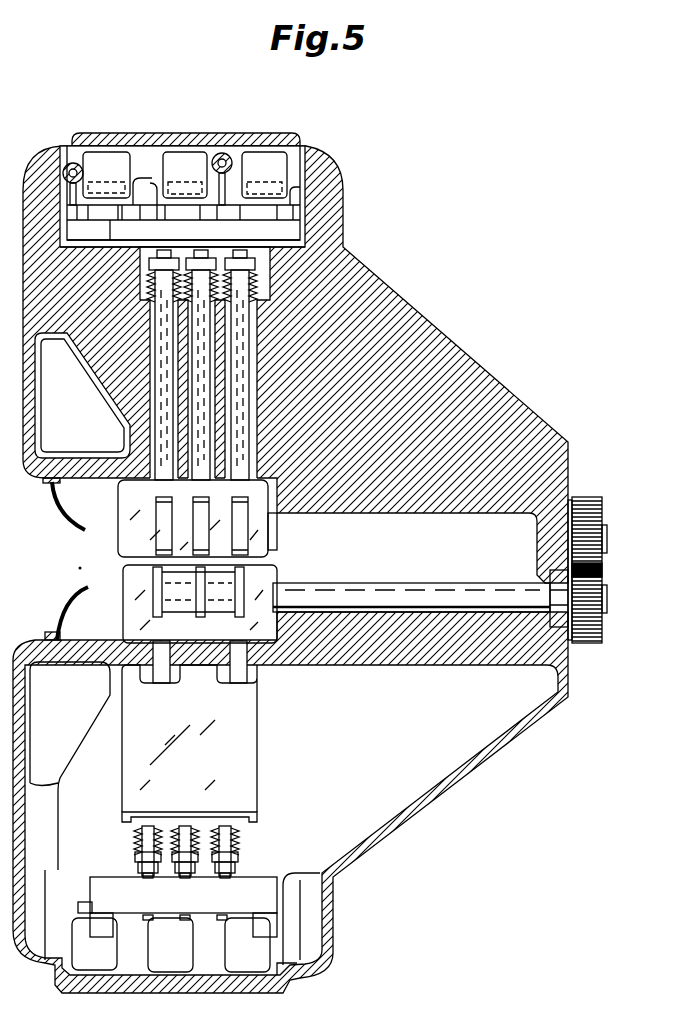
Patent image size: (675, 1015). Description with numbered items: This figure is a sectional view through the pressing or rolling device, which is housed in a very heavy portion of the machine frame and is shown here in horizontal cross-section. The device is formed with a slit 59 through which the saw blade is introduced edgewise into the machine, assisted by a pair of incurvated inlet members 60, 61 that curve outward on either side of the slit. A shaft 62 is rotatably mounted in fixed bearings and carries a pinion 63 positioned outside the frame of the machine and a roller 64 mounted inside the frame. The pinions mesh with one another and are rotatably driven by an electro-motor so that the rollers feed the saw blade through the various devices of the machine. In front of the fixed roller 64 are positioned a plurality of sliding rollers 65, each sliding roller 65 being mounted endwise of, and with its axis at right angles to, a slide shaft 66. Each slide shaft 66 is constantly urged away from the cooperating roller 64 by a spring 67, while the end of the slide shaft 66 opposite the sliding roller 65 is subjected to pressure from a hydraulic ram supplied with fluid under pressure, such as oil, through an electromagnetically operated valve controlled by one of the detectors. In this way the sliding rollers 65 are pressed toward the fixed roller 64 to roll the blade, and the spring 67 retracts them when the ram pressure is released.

The slit 59 is at (81, 560).
The incurvated inlet member 60 is at (65, 523).
The incurvated inlet member 61 is at (70, 600).
The shaft 62 is at (302, 587).
The pinion 63 is at (584, 594).
The roller 64 is at (200, 604).
The sliding roller 65 is at (237, 520).
The slide shaft 66 is at (202, 365).
The spring 67 is at (152, 286).